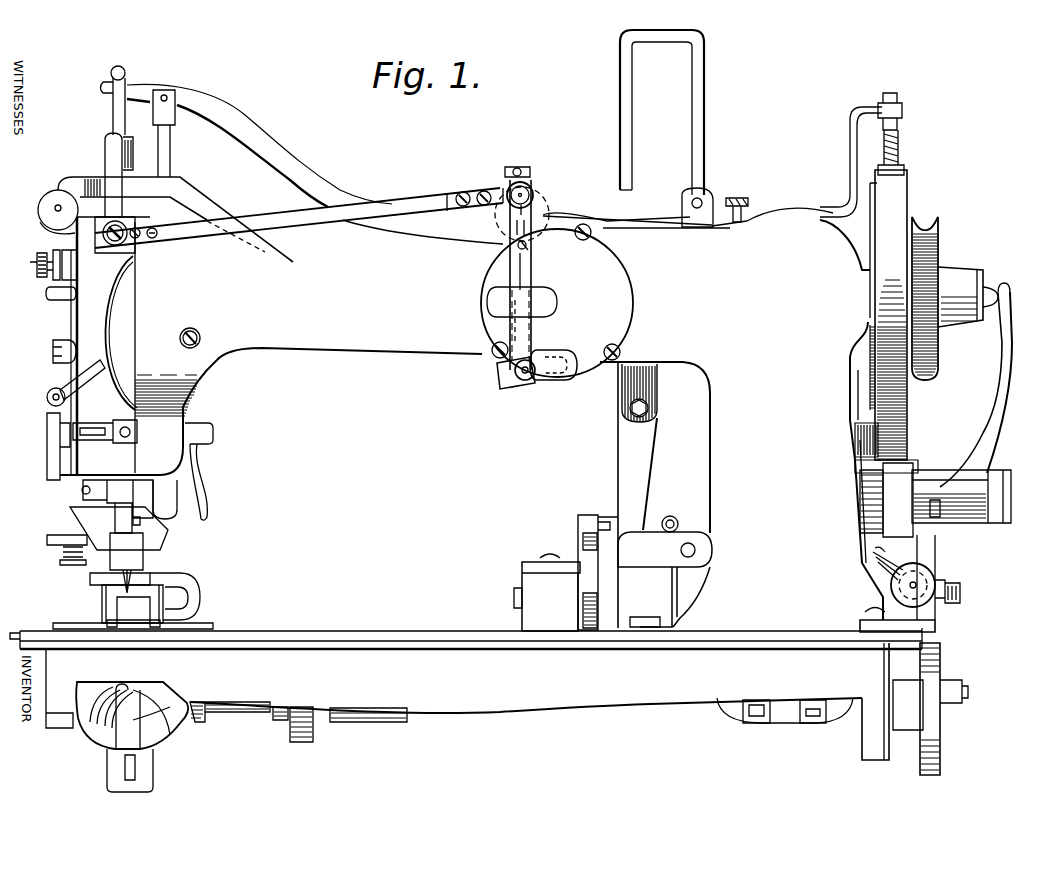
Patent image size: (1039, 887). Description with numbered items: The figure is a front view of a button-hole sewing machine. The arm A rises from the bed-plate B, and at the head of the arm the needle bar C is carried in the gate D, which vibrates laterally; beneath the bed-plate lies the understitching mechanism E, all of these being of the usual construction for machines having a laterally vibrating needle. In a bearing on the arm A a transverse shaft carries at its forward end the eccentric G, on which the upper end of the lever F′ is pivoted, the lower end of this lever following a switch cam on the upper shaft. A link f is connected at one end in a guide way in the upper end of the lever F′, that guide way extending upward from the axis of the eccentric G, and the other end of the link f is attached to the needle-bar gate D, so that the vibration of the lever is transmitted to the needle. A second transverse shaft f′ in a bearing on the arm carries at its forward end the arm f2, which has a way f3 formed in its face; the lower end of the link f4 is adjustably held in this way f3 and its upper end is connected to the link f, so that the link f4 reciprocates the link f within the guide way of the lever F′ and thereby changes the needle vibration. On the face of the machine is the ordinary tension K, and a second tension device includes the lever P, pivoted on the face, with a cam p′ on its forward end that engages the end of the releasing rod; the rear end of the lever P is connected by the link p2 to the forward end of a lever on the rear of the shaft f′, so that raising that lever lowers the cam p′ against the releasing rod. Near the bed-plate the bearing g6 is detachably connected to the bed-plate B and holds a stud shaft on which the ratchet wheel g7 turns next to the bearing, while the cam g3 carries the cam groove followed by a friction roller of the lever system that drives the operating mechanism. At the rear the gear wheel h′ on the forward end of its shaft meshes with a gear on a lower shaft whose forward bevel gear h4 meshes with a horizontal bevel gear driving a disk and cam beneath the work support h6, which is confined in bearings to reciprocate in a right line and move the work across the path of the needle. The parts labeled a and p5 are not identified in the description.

The arm A is at (465, 308).
The bed-plate B is at (360, 643).
The needle bar C is at (107, 143).
The needle bar gate D is at (98, 233).
The understitching mechanism E is at (140, 703).
The tension K is at (70, 268).
The lever P is at (193, 192).
The cam p′ is at (50, 205).
The guide block p5 is at (53, 356).
The link p2 is at (48, 394).
The link a is at (55, 365).
The link f is at (299, 221).
The lever F′ is at (513, 262).
The eccentric G is at (547, 210).
The link f4 is at (537, 335).
The way f3 is at (500, 368).
The arm f2 is at (517, 383).
The shaft f′ is at (553, 367).
The bearing g6 is at (547, 592).
The cam g3 is at (598, 572).
The ratchet wheel g7 is at (594, 630).
The gear wheel h′ is at (687, 583).
The work support h6 is at (107, 625).
The bevel gear h4 is at (200, 715).